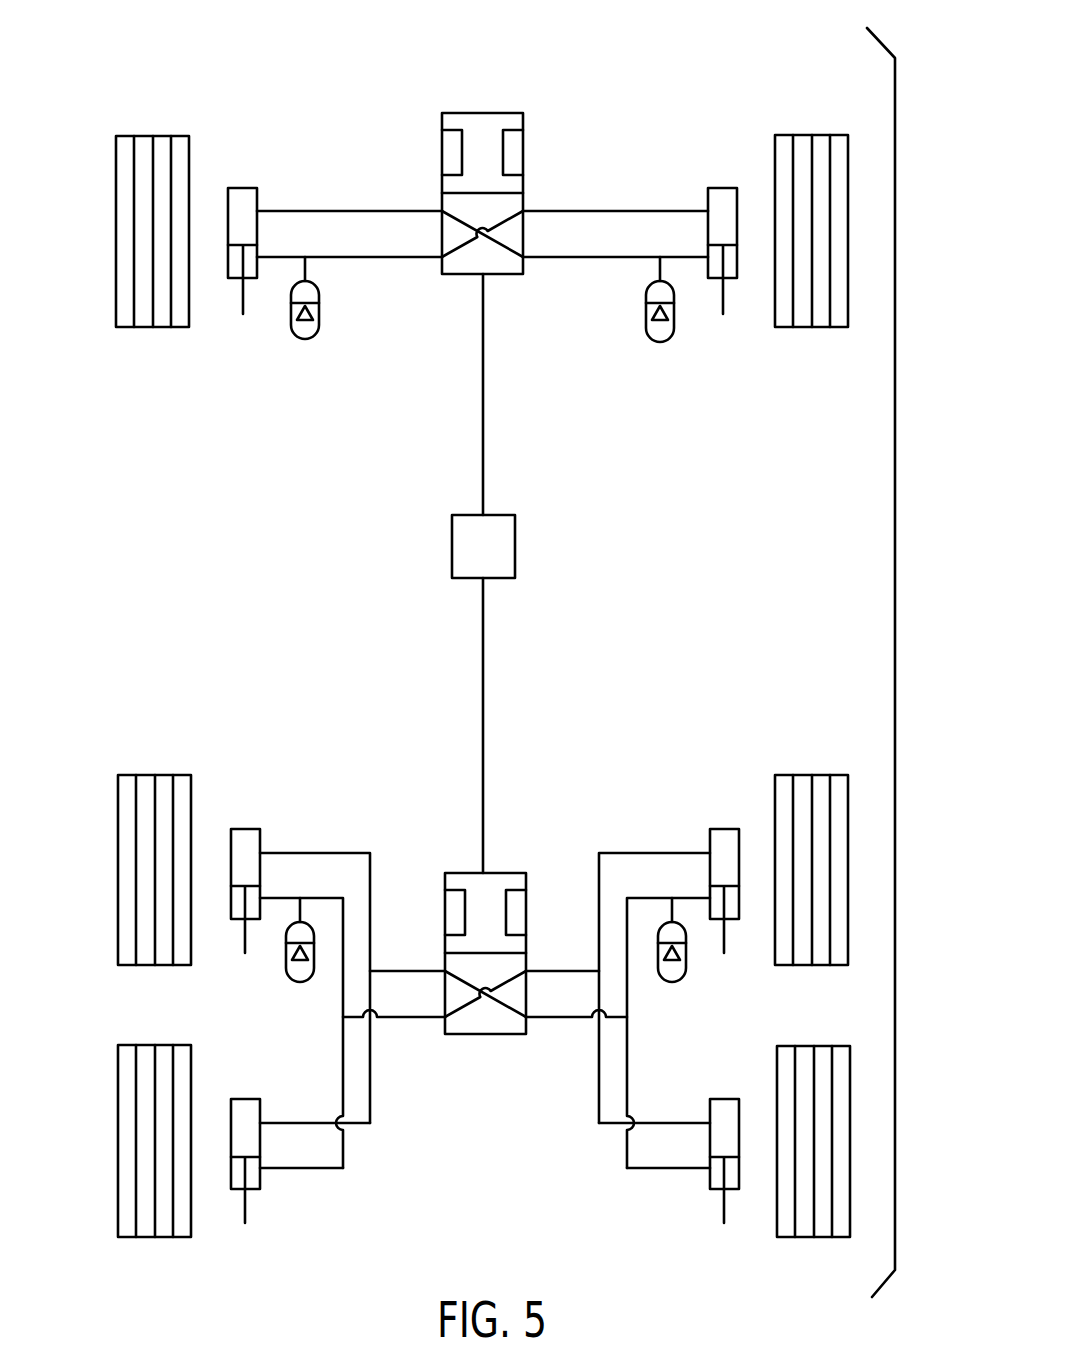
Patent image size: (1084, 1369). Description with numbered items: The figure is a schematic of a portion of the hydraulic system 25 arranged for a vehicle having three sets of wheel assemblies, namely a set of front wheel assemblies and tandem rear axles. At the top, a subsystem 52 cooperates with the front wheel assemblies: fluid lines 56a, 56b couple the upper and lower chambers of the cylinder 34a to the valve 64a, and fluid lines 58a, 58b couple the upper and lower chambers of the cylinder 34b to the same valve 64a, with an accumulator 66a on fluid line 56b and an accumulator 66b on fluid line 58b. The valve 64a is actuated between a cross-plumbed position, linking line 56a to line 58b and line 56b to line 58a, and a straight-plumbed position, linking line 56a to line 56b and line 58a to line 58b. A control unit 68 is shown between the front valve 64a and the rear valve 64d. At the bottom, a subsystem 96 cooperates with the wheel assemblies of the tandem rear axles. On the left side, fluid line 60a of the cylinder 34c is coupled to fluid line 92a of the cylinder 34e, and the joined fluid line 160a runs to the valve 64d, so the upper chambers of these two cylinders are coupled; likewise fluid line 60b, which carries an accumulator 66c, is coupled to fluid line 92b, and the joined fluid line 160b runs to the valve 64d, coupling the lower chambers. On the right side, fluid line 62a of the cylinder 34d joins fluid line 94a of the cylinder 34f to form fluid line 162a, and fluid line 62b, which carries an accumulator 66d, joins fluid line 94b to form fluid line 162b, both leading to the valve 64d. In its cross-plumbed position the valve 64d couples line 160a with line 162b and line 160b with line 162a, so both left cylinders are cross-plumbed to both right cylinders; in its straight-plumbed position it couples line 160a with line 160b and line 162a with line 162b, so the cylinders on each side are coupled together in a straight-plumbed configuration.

The hydraulic system 25 is at (505, 648).
The subsystem 52 is at (397, 138).
The subsystem 96 is at (403, 891).
The cylinder 34a is at (243, 184).
The cylinder 34b is at (722, 184).
The cylinder 34c is at (245, 825).
The cylinder 34d is at (723, 825).
The cylinder 34e is at (245, 1099).
The cylinder 34f is at (725, 1099).
The fluid line 56a is at (350, 211).
The fluid line 56b is at (350, 257).
The fluid line 58a is at (617, 211).
The fluid line 58b is at (617, 257).
The fluid line 60a is at (322, 853).
The fluid line 60b is at (290, 898).
The fluid line 62a is at (650, 853).
The fluid line 62b is at (680, 898).
The valve 64a is at (484, 110).
The valve 64d is at (502, 870).
The accumulator 66a is at (318, 338).
The accumulator 66b is at (674, 318).
The accumulator 66c is at (298, 982).
The accumulator 66d is at (680, 982).
The control unit 68 is at (452, 547).
The fluid line 92a is at (370, 1108).
The fluid line 92b is at (343, 1070).
The fluid line 94a is at (599, 1108).
The fluid line 94b is at (627, 1070).
The fluid line 160a is at (408, 971).
The fluid line 160b is at (413, 1018).
The fluid line 162a is at (563, 971).
The fluid line 162b is at (563, 1018).